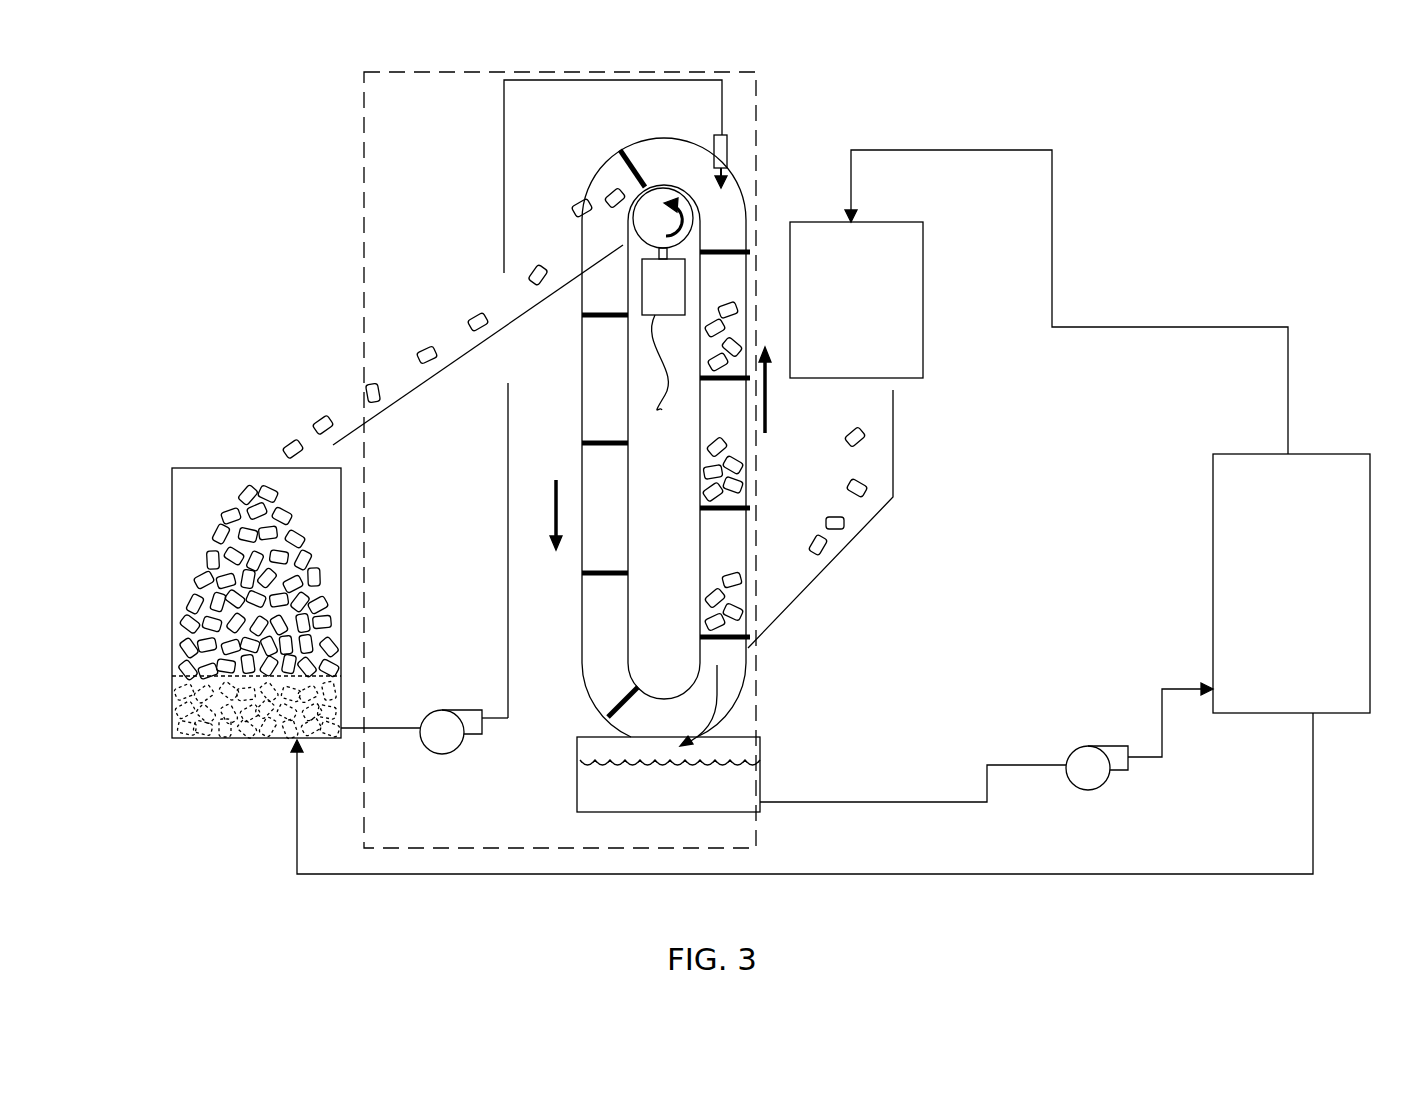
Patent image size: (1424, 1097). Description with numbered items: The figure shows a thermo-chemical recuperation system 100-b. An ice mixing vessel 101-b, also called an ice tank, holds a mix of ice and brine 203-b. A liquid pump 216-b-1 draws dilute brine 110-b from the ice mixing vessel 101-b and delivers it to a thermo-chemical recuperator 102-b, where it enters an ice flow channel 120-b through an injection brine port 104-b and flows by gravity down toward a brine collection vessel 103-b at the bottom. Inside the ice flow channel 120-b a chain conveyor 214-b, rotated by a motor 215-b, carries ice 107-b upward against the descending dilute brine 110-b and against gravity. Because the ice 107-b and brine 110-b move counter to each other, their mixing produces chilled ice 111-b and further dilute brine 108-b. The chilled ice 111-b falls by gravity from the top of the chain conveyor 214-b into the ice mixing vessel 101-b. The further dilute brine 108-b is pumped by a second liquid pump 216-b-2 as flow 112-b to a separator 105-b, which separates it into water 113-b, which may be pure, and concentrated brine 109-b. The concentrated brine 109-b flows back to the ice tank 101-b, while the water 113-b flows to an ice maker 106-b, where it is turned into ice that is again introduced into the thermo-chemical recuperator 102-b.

The thermo-chemical recuperation system 100-b is at (1325, 97).
The ice mixing vessel 101-b is at (190, 653).
The thermo-chemical recuperator 102-b is at (364, 262).
The brine collection vessel 103-b is at (745, 812).
The injection brine port 104-b is at (727, 152).
The separator 105-b is at (1213, 477).
The ice maker 106-b is at (923, 322).
The ice 107-b is at (843, 528).
The further dilute brine 108-b is at (748, 695).
The concentrated brine 109-b is at (535, 874).
The dilute brine 110-b is at (503, 138).
The chilled ice 111-b is at (408, 378).
The flow 112-b is at (1162, 715).
The water 113-b is at (1212, 327).
The ice flow channel 120-b is at (748, 613).
The mix of ice and brine 203-b is at (213, 712).
The chain conveyor 214-b is at (752, 510).
The motor 215-b is at (663, 321).
The liquid pump 216-b-1 is at (458, 708).
The liquid pump 216-b-2 is at (1090, 745).